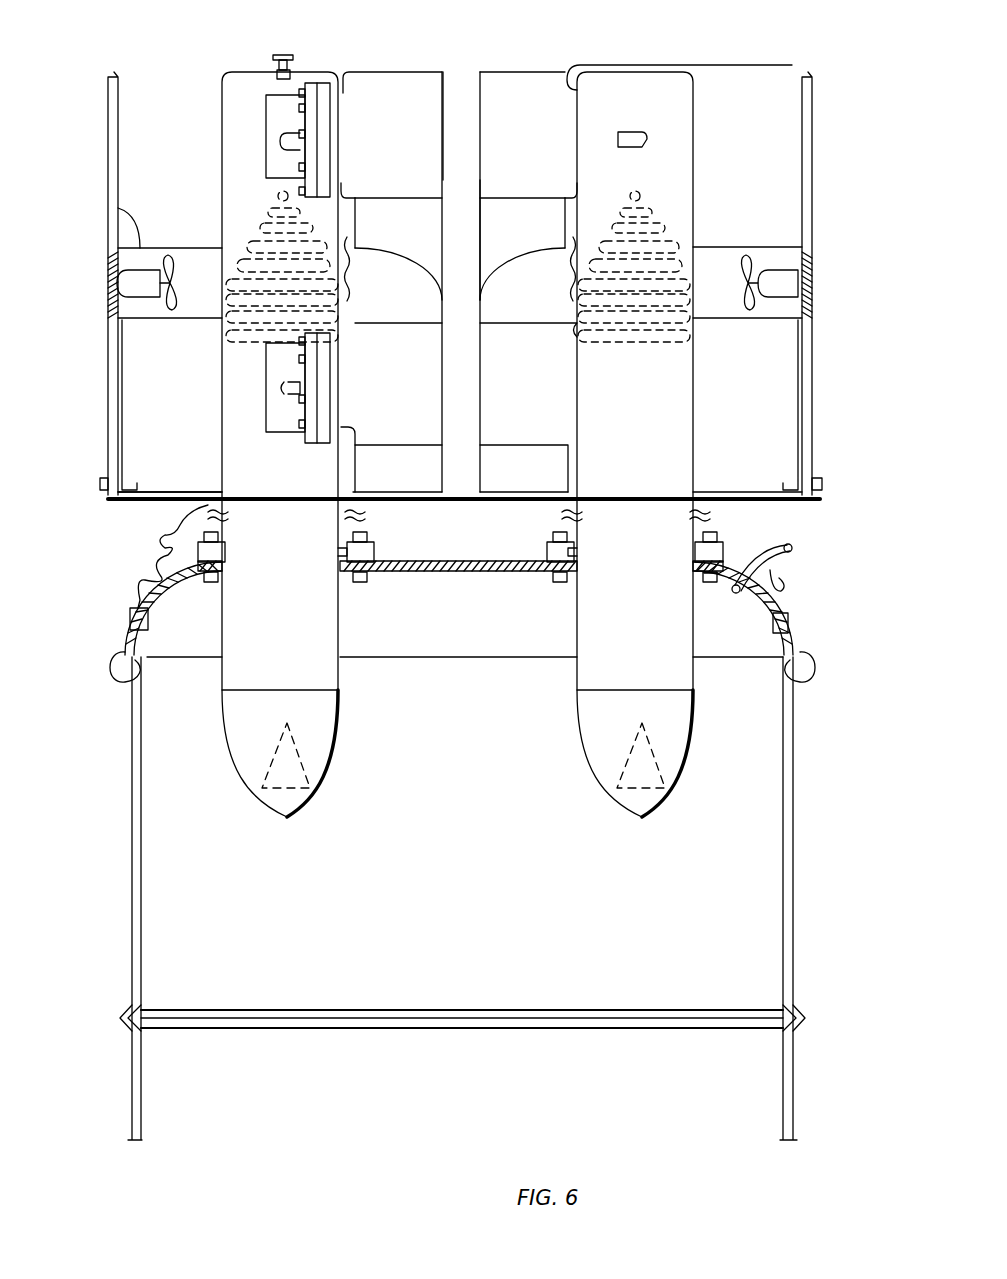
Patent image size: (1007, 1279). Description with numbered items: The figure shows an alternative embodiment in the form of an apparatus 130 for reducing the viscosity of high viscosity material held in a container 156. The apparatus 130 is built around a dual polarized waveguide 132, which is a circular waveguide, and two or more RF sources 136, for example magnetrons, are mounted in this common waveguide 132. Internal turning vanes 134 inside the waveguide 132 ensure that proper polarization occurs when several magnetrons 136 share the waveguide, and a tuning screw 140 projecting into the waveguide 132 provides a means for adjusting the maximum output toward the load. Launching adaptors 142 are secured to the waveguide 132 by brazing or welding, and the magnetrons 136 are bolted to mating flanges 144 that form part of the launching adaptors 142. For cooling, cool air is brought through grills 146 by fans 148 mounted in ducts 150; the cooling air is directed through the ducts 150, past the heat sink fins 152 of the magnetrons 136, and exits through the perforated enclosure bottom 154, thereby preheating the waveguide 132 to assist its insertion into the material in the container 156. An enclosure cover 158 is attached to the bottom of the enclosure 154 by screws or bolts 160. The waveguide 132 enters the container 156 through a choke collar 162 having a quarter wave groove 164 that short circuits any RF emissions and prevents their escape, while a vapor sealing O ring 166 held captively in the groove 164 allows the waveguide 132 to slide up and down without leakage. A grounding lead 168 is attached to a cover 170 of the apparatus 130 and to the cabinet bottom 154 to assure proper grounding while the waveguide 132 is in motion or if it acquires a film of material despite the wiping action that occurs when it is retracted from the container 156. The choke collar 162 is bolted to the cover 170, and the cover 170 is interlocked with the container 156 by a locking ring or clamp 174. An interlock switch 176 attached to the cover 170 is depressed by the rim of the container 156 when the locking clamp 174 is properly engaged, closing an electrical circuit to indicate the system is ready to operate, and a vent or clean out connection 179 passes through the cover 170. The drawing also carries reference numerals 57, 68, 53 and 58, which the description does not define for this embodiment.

The apparatus 130 is at (207, 492).
The dual polarized waveguide 132 is at (296, 590).
The internal turning vanes 134 is at (270, 235).
The RF sources 136 is at (416, 114).
The tuning screw 140 is at (295, 58).
The launching adaptors 142 is at (222, 85).
The mating flanges 144 is at (322, 168).
The grills 146 is at (107, 298).
The fans 148 is at (155, 295).
The fan motor 57 is at (133, 292).
The ducts 150 is at (118, 212).
The heat sink fins 152 is at (212, 298).
The perforated enclosure bottom 154 is at (157, 492).
The container 156 is at (133, 787).
The enclosure cover 158 is at (110, 408).
The screws or bolts 160 is at (103, 485).
The choke collar 162 is at (723, 548).
The quarter wave groove 164 is at (723, 538).
The vapor sealing O ring 166 is at (698, 540).
The grounding lead 168 is at (140, 540).
The cover 170 is at (170, 584).
The locking ring or clamp 174 is at (122, 667).
The interlock switch 176 is at (128, 620).
The vent or clean out connection 179 is at (772, 557).
The nut 68 is at (713, 580).
The air passage 53 is at (441, 177).
The air passage 58 is at (480, 282).